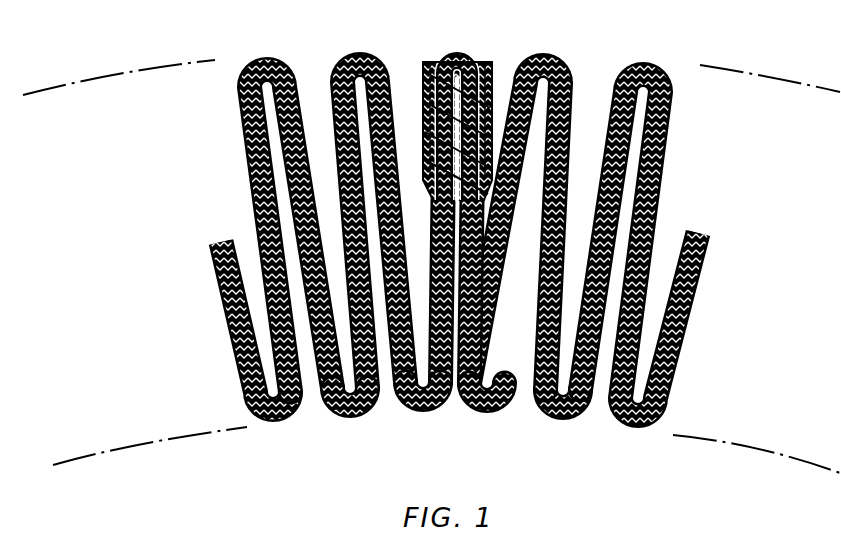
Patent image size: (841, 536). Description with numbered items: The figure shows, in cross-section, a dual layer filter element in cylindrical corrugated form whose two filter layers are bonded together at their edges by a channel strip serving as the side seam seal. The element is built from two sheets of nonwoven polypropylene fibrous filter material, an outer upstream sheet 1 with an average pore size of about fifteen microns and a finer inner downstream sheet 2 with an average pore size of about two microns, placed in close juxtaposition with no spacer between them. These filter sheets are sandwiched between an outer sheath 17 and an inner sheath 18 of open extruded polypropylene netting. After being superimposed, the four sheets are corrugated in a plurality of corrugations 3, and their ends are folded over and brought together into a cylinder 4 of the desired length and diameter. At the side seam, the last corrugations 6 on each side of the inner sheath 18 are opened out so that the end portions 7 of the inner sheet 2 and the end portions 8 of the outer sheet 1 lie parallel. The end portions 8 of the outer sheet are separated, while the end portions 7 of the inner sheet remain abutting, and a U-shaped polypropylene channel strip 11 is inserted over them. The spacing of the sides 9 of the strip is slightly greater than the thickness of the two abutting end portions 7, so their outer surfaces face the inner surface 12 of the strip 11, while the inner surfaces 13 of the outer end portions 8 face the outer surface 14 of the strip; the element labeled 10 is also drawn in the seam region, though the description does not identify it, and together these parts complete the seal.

The outer upstream filter sheet 1 is at (490, 418).
The inner downstream filter sheet 2 is at (445, 418).
The corrugations 3 is at (562, 56).
The cylinder 4 is at (260, 52).
The last corrugations 6 is at (437, 248).
The end portions of inner filter sheet 7 is at (447, 58).
The end portions of outer filter sheet 8 is at (433, 62).
The sides of channel strip 9 is at (432, 95).
The bonding layer 10 is at (439, 94).
The U-shaped channel strip 11 is at (476, 58).
The inner surface of channel strip 12 is at (473, 97).
The inner surfaces of outer sheet end portions 13 is at (478, 150).
The outer surface of channel strip 14 is at (452, 134).
The outer sheath 17 is at (343, 63).
The inner sheath 18 is at (708, 255).